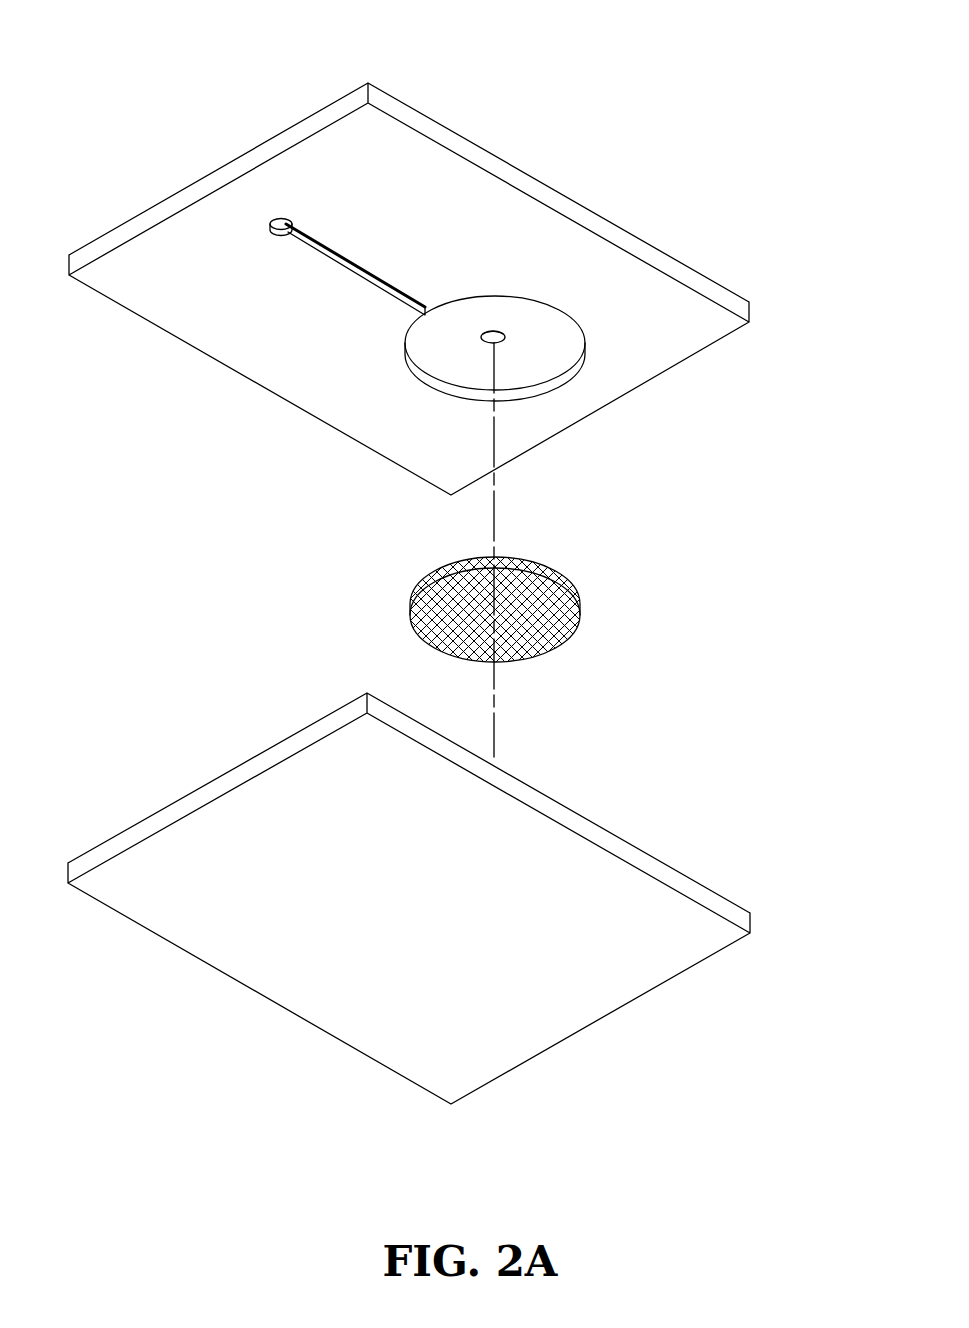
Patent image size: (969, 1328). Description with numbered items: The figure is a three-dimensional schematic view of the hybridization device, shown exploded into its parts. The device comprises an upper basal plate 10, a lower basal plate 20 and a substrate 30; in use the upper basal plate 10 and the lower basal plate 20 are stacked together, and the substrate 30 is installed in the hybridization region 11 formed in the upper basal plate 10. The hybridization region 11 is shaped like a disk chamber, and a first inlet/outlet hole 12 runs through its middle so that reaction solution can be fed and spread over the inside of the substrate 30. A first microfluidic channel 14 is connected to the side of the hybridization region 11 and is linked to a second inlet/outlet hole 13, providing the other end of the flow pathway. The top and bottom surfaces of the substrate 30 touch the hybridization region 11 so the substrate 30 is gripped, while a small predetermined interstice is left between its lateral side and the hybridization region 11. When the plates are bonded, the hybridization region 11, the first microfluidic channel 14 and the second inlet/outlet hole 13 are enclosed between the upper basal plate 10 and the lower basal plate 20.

The upper basal plate 10 is at (150, 166).
The hybridization region 11 is at (540, 323).
The first inlet/outlet hole 12 is at (500, 341).
The second inlet/outlet hole 13 is at (283, 218).
The first microfluidic channel 14 is at (372, 268).
The lower basal plate 20 is at (238, 808).
The substrate 30 is at (558, 620).